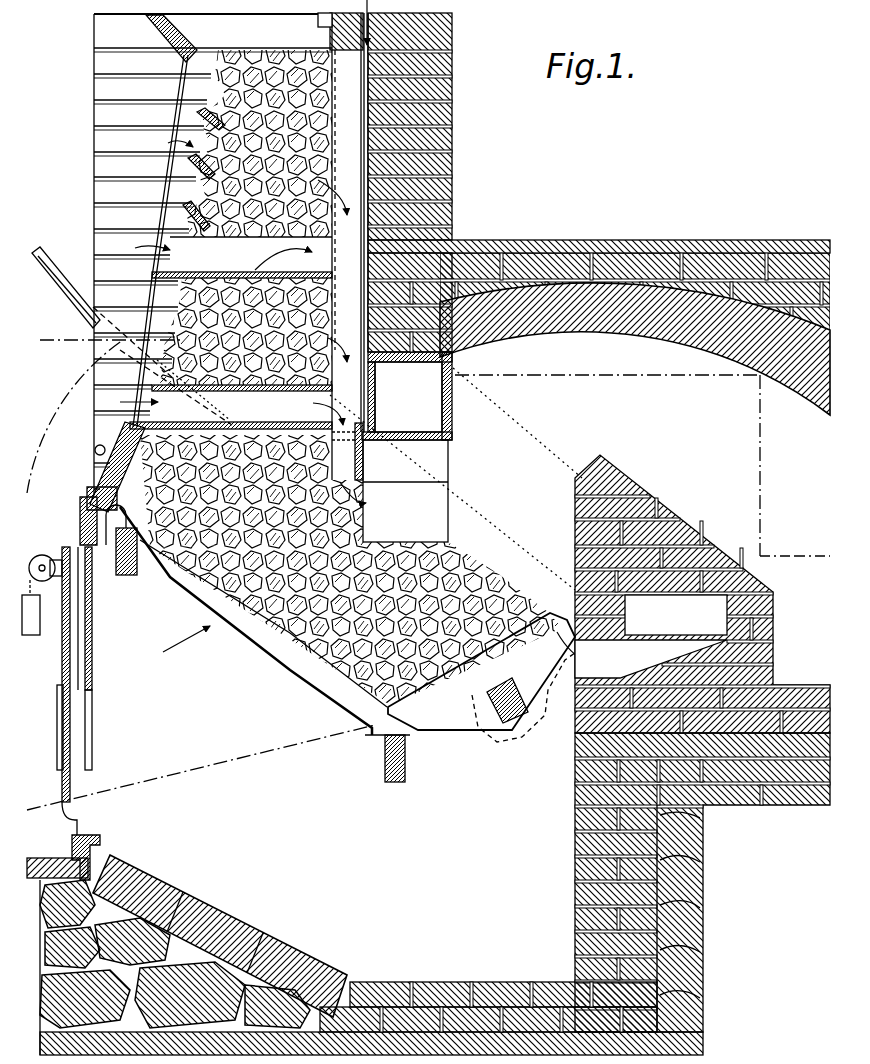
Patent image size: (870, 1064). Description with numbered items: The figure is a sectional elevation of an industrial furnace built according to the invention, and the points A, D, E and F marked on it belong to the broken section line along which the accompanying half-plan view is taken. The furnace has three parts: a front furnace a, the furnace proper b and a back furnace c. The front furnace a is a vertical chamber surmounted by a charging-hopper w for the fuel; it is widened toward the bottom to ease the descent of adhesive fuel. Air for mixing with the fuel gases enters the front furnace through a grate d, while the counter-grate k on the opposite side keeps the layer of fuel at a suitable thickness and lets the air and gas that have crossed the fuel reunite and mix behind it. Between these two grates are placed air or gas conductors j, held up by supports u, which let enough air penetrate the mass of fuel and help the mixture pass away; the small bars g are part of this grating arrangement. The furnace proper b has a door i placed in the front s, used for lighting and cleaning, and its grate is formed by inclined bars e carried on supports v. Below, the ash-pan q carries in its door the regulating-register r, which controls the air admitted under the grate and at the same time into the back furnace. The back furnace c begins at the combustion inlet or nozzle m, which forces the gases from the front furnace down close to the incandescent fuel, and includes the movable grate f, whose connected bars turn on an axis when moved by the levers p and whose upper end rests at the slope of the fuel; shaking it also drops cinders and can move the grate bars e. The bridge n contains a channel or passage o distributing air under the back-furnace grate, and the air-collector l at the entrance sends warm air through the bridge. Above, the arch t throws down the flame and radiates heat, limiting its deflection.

The front furnace a is at (228, 98).
The furnace proper b is at (268, 638).
The back furnace c is at (516, 604).
The grate d is at (203, 116).
The bars e is at (263, 623).
The movable grate f is at (489, 677).
The grate bar g is at (190, 165).
The door i is at (95, 468).
The air or gas conductors j is at (231, 333).
The counter-grate k is at (343, 222).
The air-collector l is at (365, 383).
The combustion inlet or nozzle m is at (390, 482).
The bridge n is at (575, 502).
The channel or passage o is at (676, 615).
The levers p is at (72, 298).
The ash-pan q is at (92, 618).
The regulating-register r is at (70, 738).
The front s is at (80, 510).
The arch t is at (604, 330).
The supports u is at (251, 488).
The supports v is at (122, 576).
The charging-hopper w is at (175, 38).
The section line point A is at (105, 339).
The section line point D is at (607, 465).
The section line point E is at (777, 545).
The section line point F is at (812, 545).